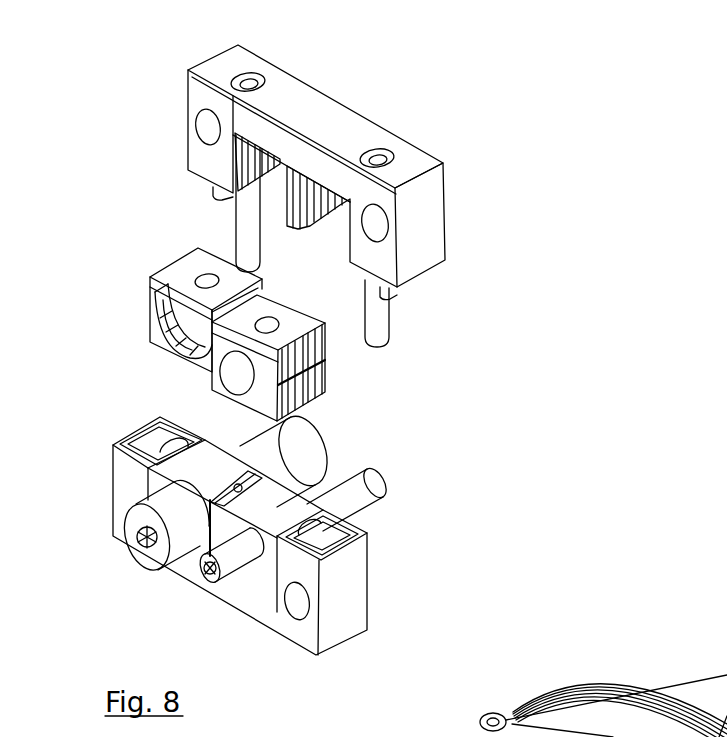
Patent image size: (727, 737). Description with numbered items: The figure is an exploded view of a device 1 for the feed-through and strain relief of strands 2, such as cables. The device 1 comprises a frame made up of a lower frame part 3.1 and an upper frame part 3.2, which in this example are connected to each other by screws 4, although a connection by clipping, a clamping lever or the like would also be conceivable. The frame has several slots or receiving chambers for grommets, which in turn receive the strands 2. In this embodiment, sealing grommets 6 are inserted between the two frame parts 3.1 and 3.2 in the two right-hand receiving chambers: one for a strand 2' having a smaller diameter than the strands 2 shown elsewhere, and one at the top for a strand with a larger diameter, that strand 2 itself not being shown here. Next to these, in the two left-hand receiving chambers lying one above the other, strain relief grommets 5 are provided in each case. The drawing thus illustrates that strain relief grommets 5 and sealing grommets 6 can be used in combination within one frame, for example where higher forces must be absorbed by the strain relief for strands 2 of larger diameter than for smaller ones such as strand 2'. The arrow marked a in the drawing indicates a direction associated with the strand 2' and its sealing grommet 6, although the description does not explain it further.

The device 1 is at (380, 369).
The strands 2 is at (185, 493).
The strand with smaller diameter 2' is at (454, 498).
The lower frame part 3.1 is at (352, 600).
The upper frame part 3.2 is at (198, 97).
The screws 4 is at (380, 155).
The strain relief grommets 5 is at (202, 478).
The sealing grommets 6 is at (283, 493).
The insertion direction a is at (438, 423).